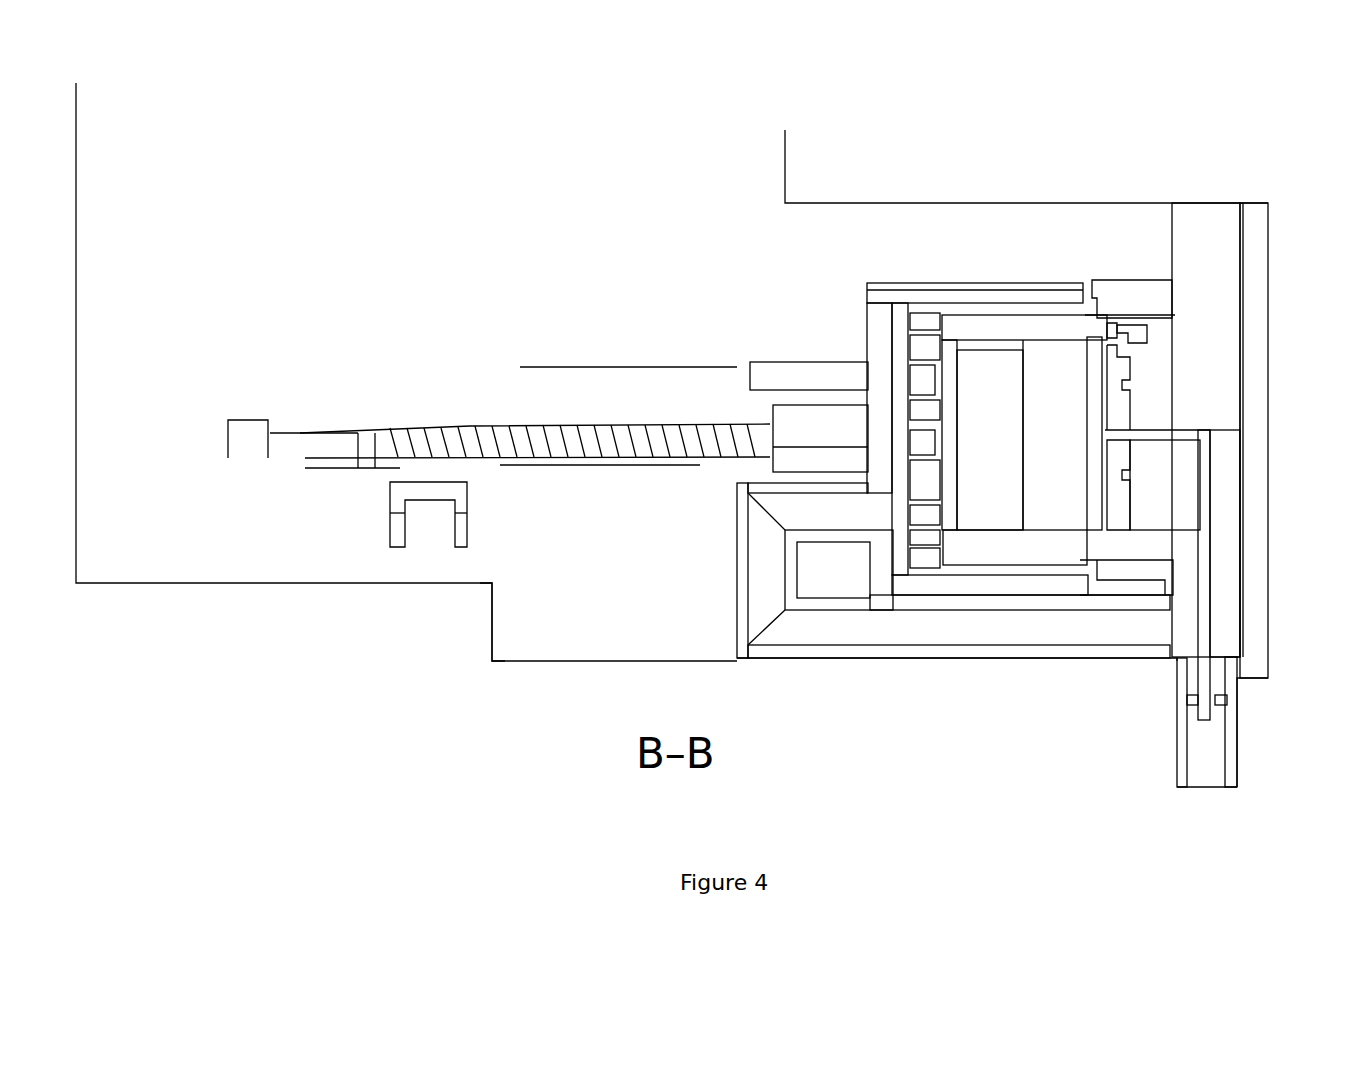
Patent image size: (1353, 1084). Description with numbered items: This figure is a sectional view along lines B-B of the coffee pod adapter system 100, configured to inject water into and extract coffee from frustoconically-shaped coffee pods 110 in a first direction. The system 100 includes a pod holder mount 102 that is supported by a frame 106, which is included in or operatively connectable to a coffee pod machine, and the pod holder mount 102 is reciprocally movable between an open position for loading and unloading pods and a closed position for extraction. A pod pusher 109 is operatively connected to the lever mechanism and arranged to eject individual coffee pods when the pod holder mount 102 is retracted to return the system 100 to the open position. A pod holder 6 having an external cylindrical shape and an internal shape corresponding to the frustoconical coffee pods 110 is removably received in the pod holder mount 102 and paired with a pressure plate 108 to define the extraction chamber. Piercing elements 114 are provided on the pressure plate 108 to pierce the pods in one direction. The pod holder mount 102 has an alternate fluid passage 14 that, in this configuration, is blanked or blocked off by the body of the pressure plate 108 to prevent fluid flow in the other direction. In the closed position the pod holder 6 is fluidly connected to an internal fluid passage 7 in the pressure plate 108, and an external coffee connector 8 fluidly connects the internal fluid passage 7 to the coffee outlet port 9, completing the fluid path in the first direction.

The coffee pod adapter system 100 is at (870, 94).
The pod holder mount 102 is at (977, 283).
The frame 106 is at (490, 625).
The pressure plate 108 is at (1205, 198).
The pod pusher 109 is at (598, 462).
The coffee pod 110 is at (1012, 437).
The piercing elements 114 is at (1107, 409).
The pod holder 6 is at (1132, 282).
The internal fluid passage 7 is at (1106, 442).
The external coffee connector 8 is at (1223, 718).
The coffee outlet port 9 is at (1237, 765).
The fluid passage 14 is at (1018, 623).